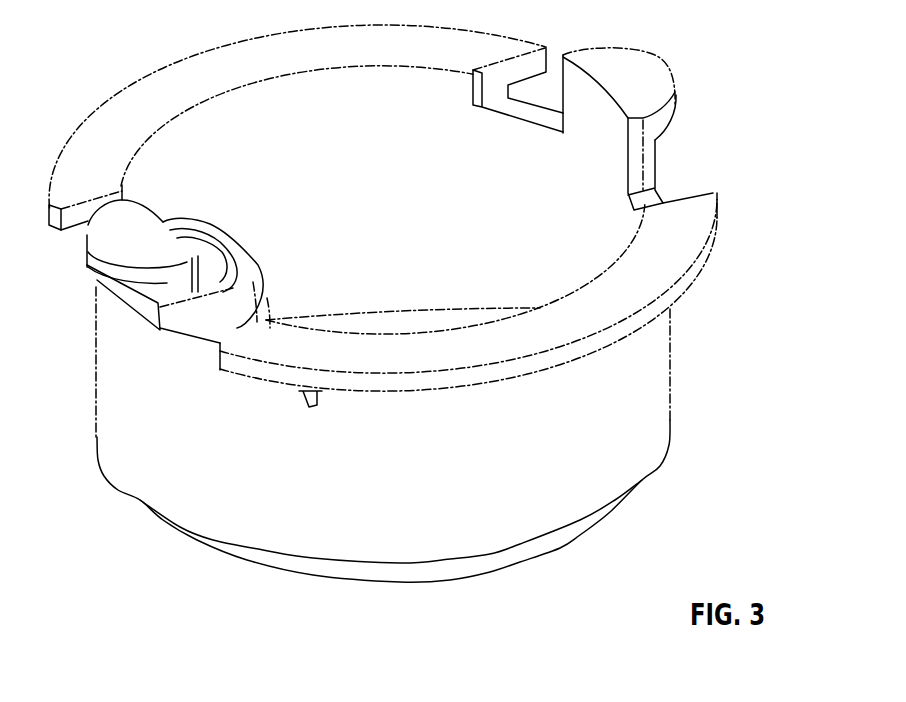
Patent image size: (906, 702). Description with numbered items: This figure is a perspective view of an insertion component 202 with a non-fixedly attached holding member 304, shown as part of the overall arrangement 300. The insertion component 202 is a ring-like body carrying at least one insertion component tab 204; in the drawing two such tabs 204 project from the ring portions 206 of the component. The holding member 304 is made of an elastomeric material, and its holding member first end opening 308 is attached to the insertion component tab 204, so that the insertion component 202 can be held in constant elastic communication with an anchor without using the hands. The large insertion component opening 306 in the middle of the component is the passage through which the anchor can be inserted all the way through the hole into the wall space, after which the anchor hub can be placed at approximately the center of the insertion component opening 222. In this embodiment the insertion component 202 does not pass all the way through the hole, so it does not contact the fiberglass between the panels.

The insertion component 202 is at (221, 461).
The insertion component tab 204 is at (648, 85).
The ring 206 is at (112, 179).
The insertion component opening 222 is at (406, 332).
The assembly 300 is at (724, 64).
The holding member 304 is at (241, 246).
The insertion component opening 306 is at (464, 204).
The holding member first end opening 308 is at (132, 308).